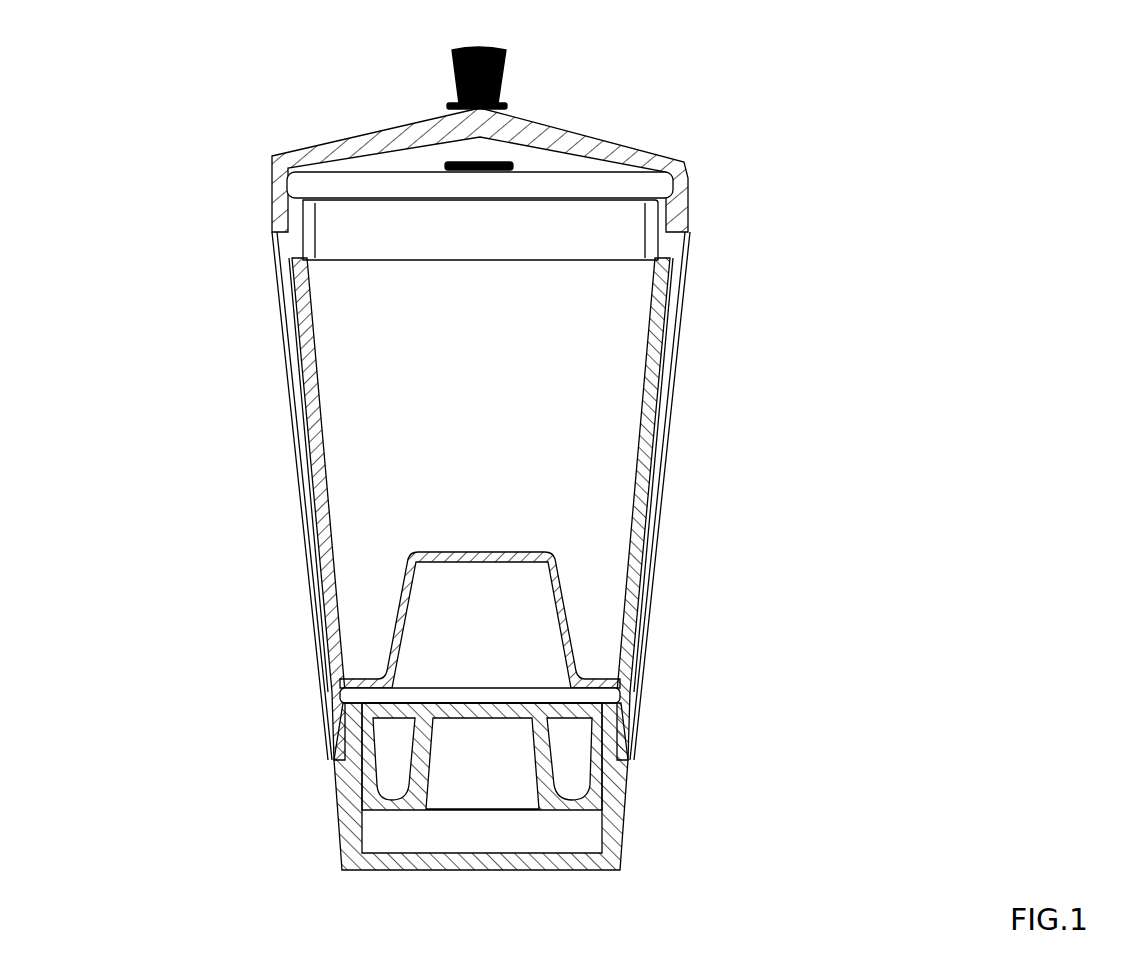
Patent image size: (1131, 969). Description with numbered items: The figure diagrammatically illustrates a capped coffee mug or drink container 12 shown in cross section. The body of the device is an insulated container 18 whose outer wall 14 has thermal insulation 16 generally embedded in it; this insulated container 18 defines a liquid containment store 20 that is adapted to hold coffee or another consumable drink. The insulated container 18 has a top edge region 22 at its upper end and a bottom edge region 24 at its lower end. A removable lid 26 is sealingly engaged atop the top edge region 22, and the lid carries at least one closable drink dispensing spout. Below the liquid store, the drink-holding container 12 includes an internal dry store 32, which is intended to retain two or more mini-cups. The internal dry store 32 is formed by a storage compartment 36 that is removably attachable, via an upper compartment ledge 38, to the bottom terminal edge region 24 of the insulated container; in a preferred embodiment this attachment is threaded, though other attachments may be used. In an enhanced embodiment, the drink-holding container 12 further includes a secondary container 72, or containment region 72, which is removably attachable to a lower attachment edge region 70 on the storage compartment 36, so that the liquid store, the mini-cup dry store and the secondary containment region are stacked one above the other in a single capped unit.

The capped coffee mug or drink container 12 is at (745, 80).
The outer wall 14 is at (678, 317).
The thermal insulation 16 is at (680, 280).
The insulated container 18 is at (672, 405).
The liquid containment store 20 is at (457, 425).
The top edge region 22 is at (688, 230).
The bottom edge region 24 is at (638, 710).
The removable lid 26 is at (343, 133).
The internal dry store 32 is at (519, 628).
The storage compartment 36 is at (410, 747).
The upper compartment ledge 38 is at (625, 730).
The lower attachment edge region 70 is at (630, 800).
The secondary container 72 is at (457, 792).